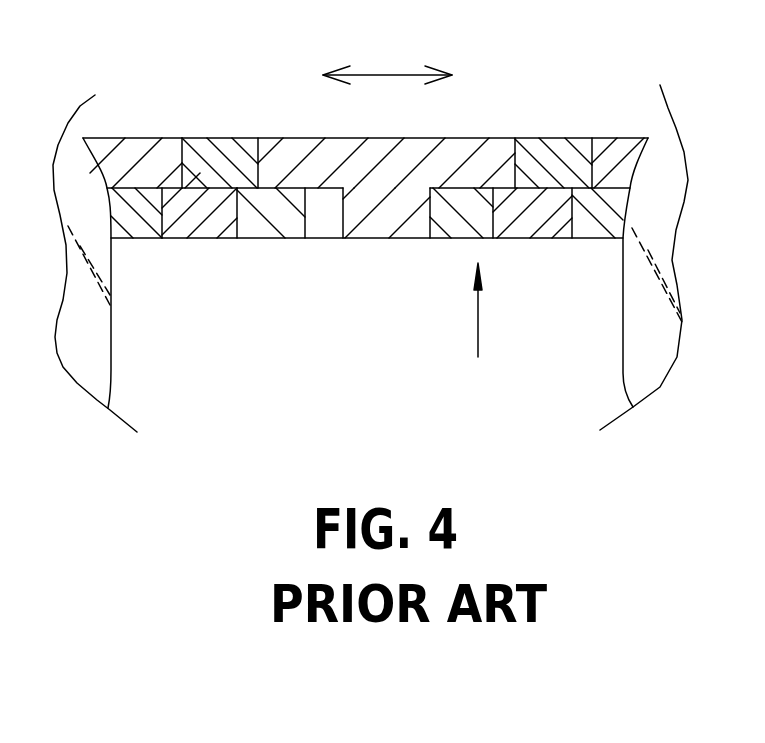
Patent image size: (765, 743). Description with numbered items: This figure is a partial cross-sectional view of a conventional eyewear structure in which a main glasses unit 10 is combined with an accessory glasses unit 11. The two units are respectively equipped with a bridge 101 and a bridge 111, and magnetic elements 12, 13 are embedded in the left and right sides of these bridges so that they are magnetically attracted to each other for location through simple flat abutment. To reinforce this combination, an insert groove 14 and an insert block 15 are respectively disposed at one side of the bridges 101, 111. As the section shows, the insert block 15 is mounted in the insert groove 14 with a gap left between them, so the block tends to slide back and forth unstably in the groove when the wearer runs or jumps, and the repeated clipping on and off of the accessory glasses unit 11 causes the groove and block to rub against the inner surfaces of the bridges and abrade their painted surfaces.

The main glasses unit 10 is at (473, 331).
The accessory glasses unit 11 is at (475, 127).
The bridge 111 is at (147, 143).
The magnetic element 12 is at (540, 240).
The magnetic element 13 is at (222, 143).
The insert groove 14 is at (325, 225).
The insert block 15 is at (340, 238).
The bridge 101 is at (142, 228).